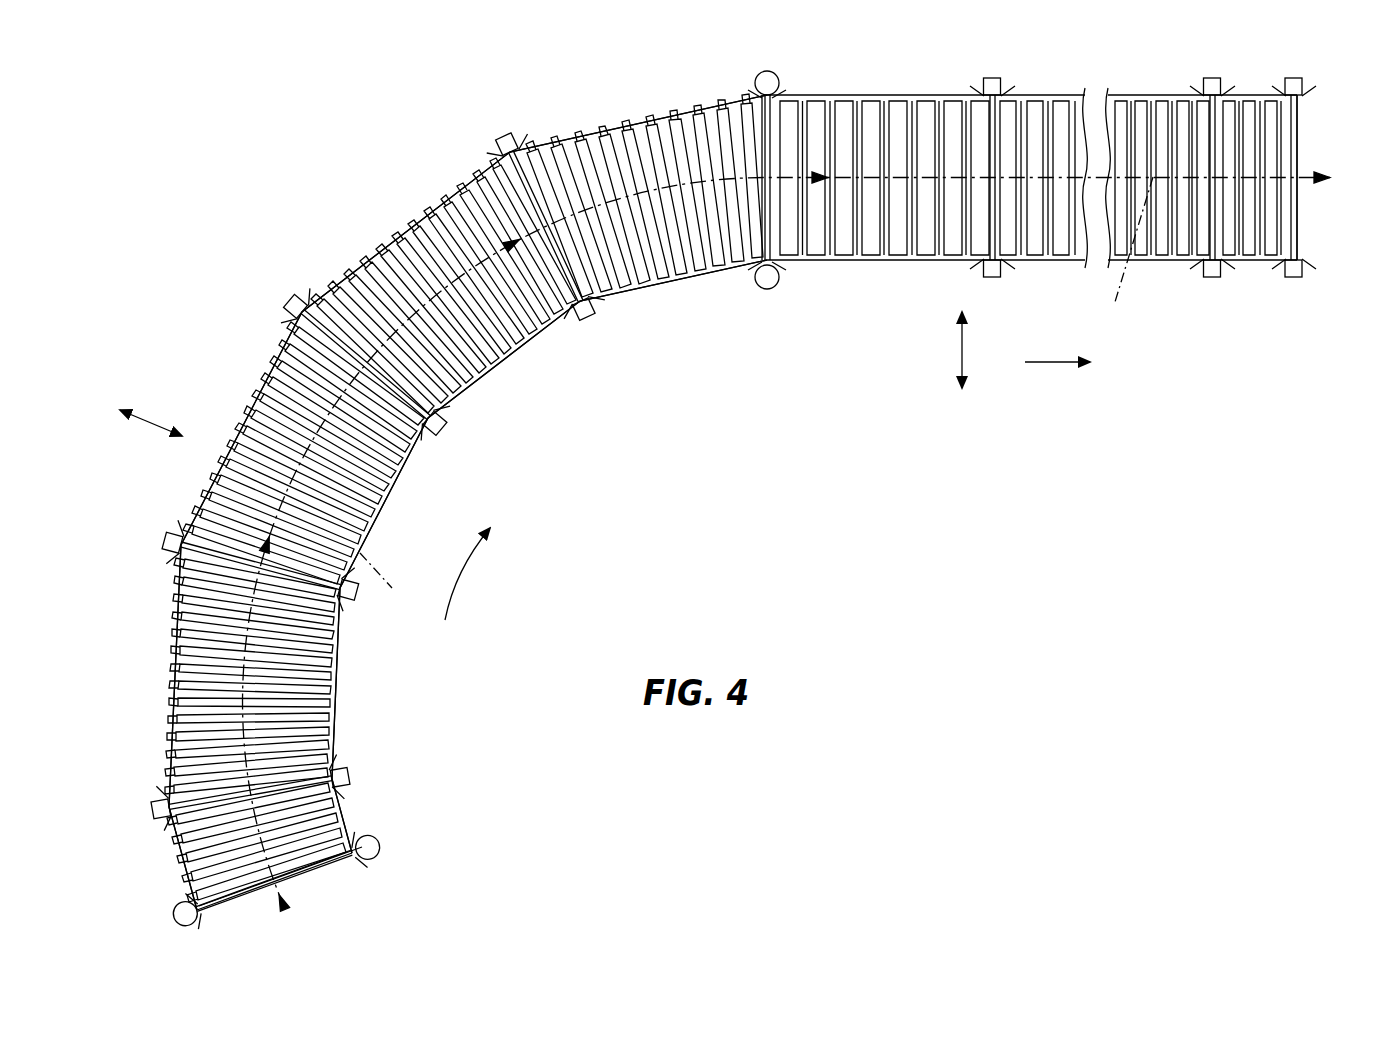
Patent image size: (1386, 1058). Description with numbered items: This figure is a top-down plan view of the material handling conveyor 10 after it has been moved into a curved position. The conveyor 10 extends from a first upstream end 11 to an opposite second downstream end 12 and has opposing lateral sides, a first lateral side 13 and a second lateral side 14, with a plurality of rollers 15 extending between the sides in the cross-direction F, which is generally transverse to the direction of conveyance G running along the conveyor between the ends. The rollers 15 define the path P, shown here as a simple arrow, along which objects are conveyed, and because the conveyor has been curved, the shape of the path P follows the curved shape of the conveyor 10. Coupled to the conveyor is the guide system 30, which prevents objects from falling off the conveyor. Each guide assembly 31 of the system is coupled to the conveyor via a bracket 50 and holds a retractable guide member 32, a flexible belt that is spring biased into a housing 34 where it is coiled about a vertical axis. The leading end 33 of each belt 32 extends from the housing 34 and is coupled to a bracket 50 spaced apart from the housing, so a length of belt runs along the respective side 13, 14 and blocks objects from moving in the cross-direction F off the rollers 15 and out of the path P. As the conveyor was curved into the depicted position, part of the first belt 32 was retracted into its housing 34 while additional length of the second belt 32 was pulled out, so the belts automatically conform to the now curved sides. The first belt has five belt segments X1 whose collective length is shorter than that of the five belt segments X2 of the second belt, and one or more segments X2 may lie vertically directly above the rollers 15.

The material handling conveyor 10 is at (908, 302).
The first upstream end 11 is at (340, 885).
The second downstream end 12 is at (1328, 135).
The first lateral side 13 is at (1147, 272).
The second lateral side 14 is at (842, 86).
The rollers 15 is at (922, 113).
The guide system 30 is at (1076, 66).
The guide assembly 31 is at (776, 76).
The retractable guide member 32 is at (740, 93).
The leading end 33 is at (760, 80).
The housing 34 is at (765, 286).
The bracket 50 is at (1000, 84).
The belt segments of the first belt X1 is at (605, 302).
The belt segments of the second belt X2 is at (640, 118).
The path P is at (740, 447).
The cross-direction F is at (172, 422).
The direction of conveyance G is at (1060, 361).